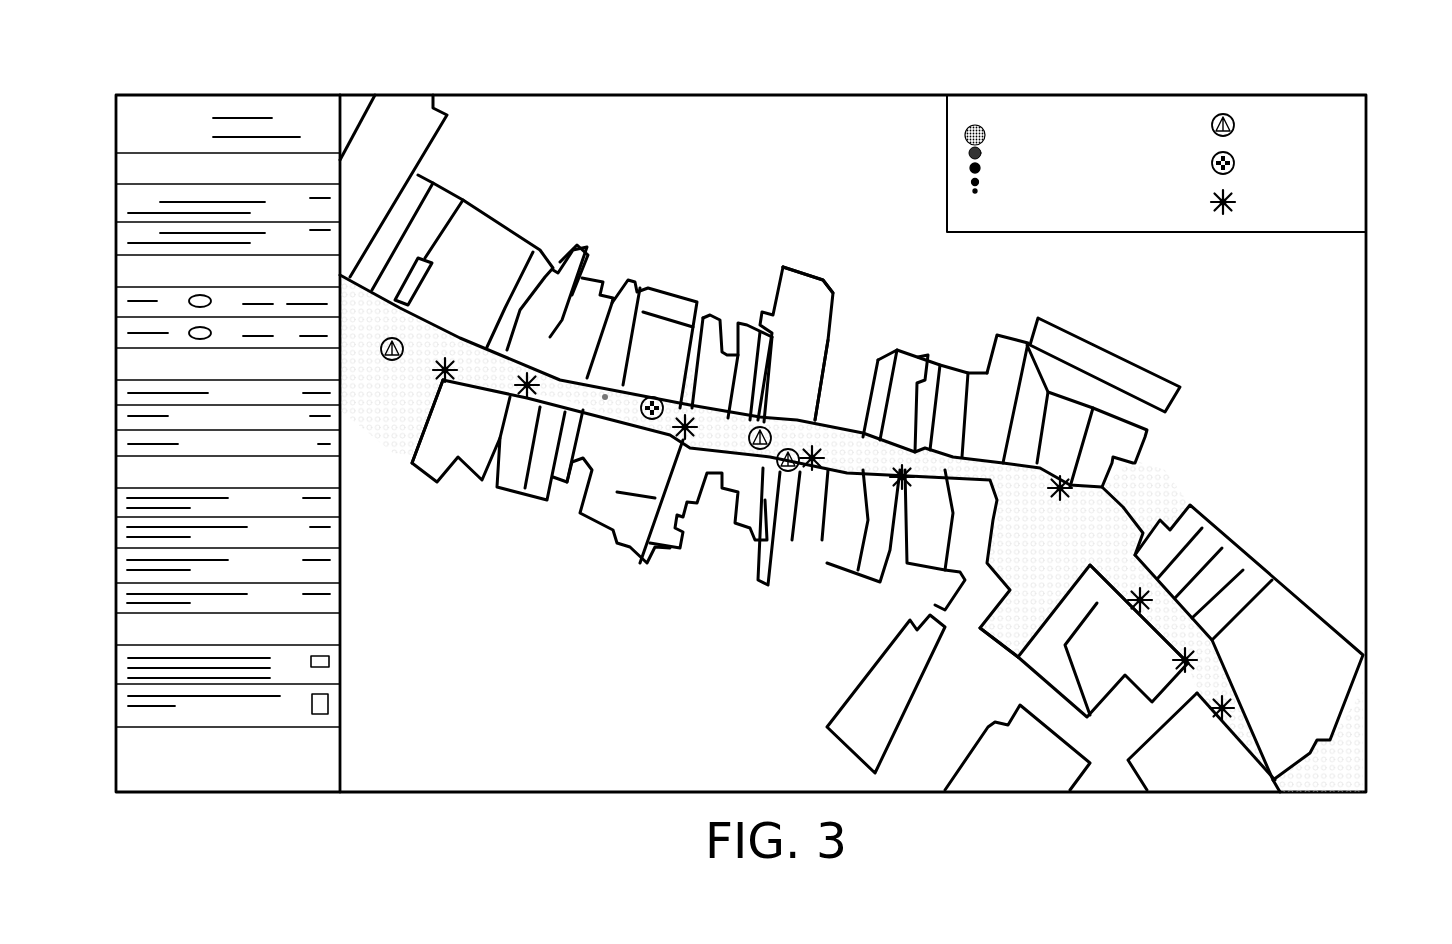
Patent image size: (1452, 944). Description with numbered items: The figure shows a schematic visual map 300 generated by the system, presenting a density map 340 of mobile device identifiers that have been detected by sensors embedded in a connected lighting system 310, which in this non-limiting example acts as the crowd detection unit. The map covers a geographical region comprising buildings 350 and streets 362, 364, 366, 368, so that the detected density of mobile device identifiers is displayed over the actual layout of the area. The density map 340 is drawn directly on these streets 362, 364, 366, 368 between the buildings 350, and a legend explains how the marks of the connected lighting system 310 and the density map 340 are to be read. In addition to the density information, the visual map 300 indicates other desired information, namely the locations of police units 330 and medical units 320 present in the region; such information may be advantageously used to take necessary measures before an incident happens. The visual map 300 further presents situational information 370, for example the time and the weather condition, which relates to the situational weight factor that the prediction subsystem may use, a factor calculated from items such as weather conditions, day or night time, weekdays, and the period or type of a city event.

The visual map 300 is at (543, 74).
The connected lighting system 310 is at (1300, 205).
The medical units 320 is at (1355, 166).
The police units 330 is at (1345, 128).
The density map 340 is at (988, 122).
The buildings 350 is at (808, 296).
The street 362 is at (457, 338).
The street 364 is at (837, 420).
The street 366 is at (983, 637).
The street 368 is at (1127, 507).
The situational information 370 is at (338, 93).